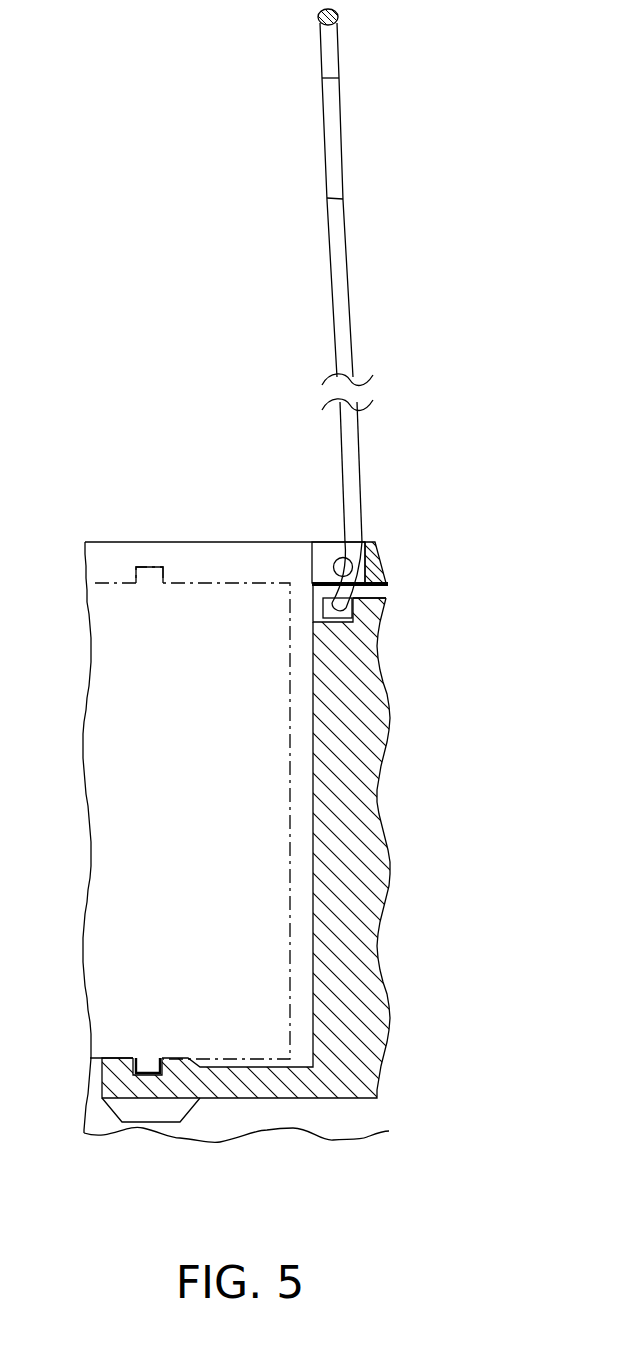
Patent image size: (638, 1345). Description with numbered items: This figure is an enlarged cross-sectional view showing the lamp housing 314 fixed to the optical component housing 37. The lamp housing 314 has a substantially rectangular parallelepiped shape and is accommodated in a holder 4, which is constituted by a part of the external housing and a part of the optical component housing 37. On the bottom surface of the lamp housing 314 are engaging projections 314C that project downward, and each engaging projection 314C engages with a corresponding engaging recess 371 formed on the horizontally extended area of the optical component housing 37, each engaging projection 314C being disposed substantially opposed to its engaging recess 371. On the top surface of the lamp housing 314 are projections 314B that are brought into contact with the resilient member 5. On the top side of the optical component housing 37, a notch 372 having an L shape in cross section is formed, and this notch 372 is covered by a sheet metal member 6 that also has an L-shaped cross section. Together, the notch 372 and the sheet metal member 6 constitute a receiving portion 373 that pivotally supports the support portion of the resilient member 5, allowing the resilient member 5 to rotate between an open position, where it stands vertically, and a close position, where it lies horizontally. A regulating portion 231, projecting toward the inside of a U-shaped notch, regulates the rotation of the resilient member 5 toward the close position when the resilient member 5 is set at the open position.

The resilient member 5 is at (333, 135).
The regulating portion 231 is at (340, 560).
The lamp housing 314 is at (243, 595).
The projection 314B is at (157, 566).
The engaging projection 314C is at (143, 1077).
The optical component housing 37 is at (375, 870).
The holder 4 is at (319, 820).
The engaging recess 371 is at (152, 1060).
The notch 372 is at (353, 608).
The receiving portion 373 is at (422, 595).
The sheet metal member 6 is at (385, 591).